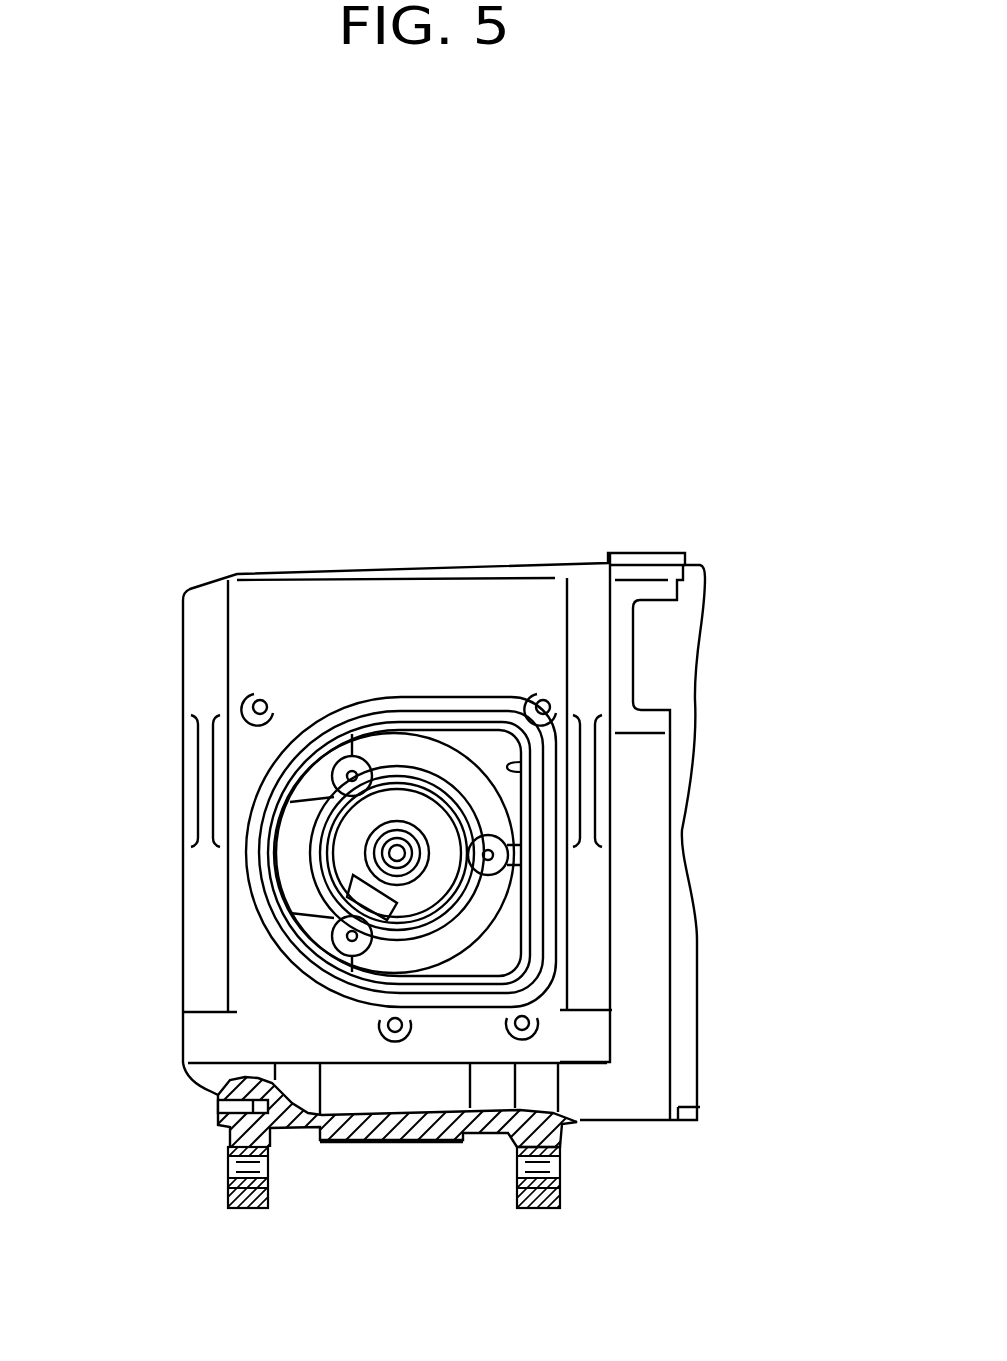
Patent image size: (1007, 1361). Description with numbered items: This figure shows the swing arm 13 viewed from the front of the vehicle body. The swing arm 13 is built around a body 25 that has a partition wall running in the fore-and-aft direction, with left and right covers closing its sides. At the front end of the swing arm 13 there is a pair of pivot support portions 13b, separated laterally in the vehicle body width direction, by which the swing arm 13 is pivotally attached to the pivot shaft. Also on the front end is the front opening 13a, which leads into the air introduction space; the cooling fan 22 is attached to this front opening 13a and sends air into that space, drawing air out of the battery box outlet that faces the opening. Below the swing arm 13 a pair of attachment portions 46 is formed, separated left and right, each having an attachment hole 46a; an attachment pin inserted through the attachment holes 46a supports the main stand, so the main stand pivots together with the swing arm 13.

The swing arm 13 is at (488, 563).
The front opening 13a is at (508, 770).
The pivot support portions 13b is at (206, 786).
The cooling fan 22 is at (440, 885).
The body 25 is at (312, 633).
The attachment portions 46 is at (247, 1210).
The attachment holes 46a is at (247, 1167).